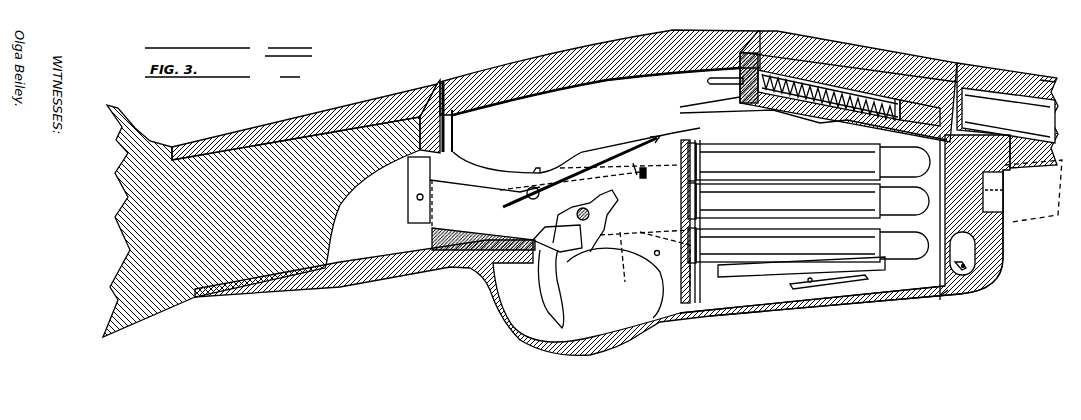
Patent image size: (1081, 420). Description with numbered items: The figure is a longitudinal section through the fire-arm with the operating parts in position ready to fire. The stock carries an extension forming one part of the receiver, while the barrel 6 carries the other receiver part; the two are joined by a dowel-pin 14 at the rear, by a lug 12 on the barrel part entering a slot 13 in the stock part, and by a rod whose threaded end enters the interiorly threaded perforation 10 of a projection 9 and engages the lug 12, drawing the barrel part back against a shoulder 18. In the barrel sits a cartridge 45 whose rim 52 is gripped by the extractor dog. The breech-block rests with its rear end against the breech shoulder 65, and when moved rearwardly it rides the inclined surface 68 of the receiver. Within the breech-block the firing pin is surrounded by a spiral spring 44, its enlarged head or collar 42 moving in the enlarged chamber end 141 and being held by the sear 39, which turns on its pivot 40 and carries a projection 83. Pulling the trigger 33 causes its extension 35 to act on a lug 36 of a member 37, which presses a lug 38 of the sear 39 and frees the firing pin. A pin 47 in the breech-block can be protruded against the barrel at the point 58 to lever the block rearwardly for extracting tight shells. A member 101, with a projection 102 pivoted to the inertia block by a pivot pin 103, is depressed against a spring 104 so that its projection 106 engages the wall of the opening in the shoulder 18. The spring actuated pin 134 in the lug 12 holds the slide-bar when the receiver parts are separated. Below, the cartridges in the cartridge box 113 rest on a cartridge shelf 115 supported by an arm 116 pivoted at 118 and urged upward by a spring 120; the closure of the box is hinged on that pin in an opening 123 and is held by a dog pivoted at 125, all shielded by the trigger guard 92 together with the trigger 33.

The shoulder 18 is at (443, 108).
The dowel-pin 14 is at (440, 80).
The inclined surface 68 is at (492, 66).
The member 37 is at (633, 163).
The breech shoulder 65 is at (744, 52).
The enlarged rear extremity of chamber 141 is at (770, 76).
The spiral spring 44 is at (823, 90).
The projection 83 is at (853, 108).
The pin 47 is at (884, 70).
The point 58 is at (937, 97).
The cartridge 45 is at (1020, 127).
The rim 52 is at (952, 122).
The barrel 6 is at (1040, 80).
The shoulder or collar 42 is at (757, 86).
The sear 39 is at (733, 120).
The pivot 40 is at (797, 130).
The lug 12 is at (1000, 180).
The slot 13 is at (1000, 197).
The interiorly threaded perforation 10 is at (997, 203).
The projection 9 is at (998, 258).
The opening 123 is at (968, 268).
The pivot 118 is at (945, 290).
The spring 120 is at (960, 253).
The arm 116 is at (828, 285).
The cartridge box 113 is at (762, 283).
The cartridge shelf 115 is at (713, 317).
The trigger guard 92 is at (613, 348).
The trigger 33 is at (550, 285).
The lug 36 is at (605, 205).
The pivot 125 is at (655, 252).
The spring actuated pin 134 is at (576, 220).
The extension 35 is at (610, 190).
The lug 38 is at (637, 175).
The projection 106 is at (455, 152).
The member 101 is at (457, 172).
The projection 102 is at (417, 196).
The pivot pin 103 is at (427, 209).
The spring 104 is at (430, 217).